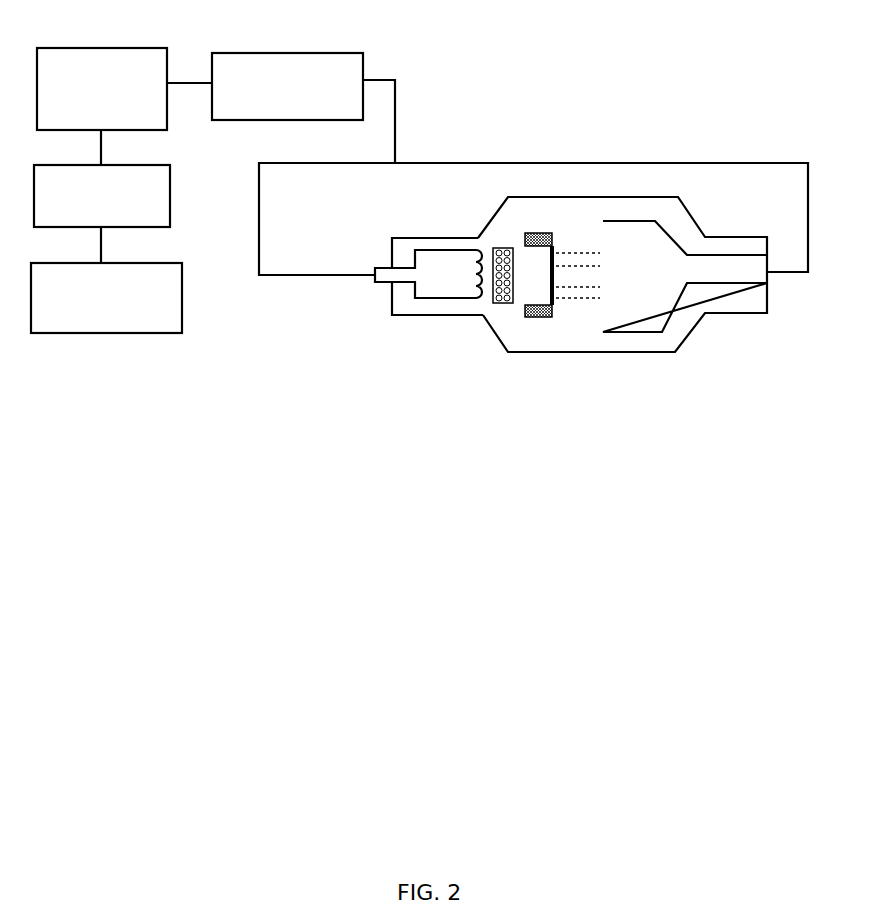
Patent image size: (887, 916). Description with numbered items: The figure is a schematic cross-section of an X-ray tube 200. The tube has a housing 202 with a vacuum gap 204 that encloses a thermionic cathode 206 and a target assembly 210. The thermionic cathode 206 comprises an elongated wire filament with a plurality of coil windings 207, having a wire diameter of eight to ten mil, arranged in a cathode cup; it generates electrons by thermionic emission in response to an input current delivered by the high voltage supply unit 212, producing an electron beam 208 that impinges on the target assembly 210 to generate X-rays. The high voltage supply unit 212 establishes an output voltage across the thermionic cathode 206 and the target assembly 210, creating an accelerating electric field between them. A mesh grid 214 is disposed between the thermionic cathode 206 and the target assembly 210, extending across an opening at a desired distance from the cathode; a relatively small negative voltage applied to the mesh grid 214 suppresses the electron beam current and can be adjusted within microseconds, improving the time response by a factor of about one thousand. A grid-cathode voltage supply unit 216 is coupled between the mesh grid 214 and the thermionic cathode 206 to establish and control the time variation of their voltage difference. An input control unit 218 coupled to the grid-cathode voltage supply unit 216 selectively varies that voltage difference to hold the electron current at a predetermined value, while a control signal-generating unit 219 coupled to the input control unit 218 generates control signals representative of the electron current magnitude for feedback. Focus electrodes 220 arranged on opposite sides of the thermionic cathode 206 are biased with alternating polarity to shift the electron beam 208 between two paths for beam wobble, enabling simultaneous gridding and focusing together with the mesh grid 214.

The X-ray tube 200 is at (588, 267).
The housing 202 is at (490, 208).
The vacuum gap 204 is at (607, 343).
The thermionic cathode 206 is at (447, 307).
The coil windings 207 is at (482, 247).
The electron beam 208 is at (568, 303).
The target assembly 210 is at (650, 221).
The high voltage supply unit 212 is at (364, 62).
The mesh grid 214 is at (502, 310).
The grid-cathode voltage supply unit 216 is at (158, 130).
The input control unit 218 is at (171, 192).
The control signal-generating unit 219 is at (183, 292).
The focus electrodes 220 is at (542, 228).